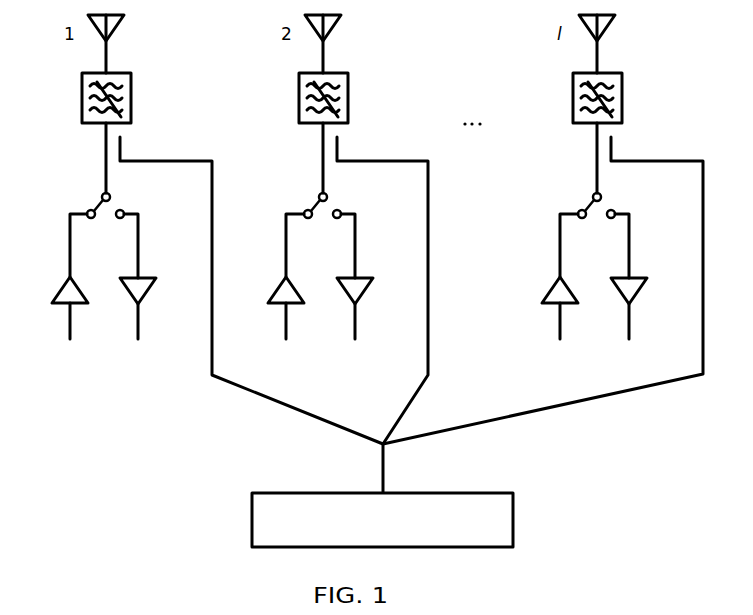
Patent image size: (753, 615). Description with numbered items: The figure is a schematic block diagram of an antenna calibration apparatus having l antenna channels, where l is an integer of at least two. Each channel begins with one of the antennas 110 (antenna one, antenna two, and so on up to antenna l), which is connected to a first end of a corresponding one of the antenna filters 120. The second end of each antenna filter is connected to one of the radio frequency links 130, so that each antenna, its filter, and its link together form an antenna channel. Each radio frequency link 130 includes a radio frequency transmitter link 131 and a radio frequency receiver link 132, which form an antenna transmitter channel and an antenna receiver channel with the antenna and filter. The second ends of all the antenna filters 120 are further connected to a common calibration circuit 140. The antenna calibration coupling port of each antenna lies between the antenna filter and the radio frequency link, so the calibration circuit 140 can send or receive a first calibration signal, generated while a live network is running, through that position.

The antennas 110 is at (108, 52).
The antenna filters 120 is at (132, 100).
The radio frequency links 130 is at (103, 170).
The radio frequency transmitter links 131 is at (70, 262).
The radio frequency receiver links 132 is at (138, 262).
The calibration circuit 140 is at (382, 495).